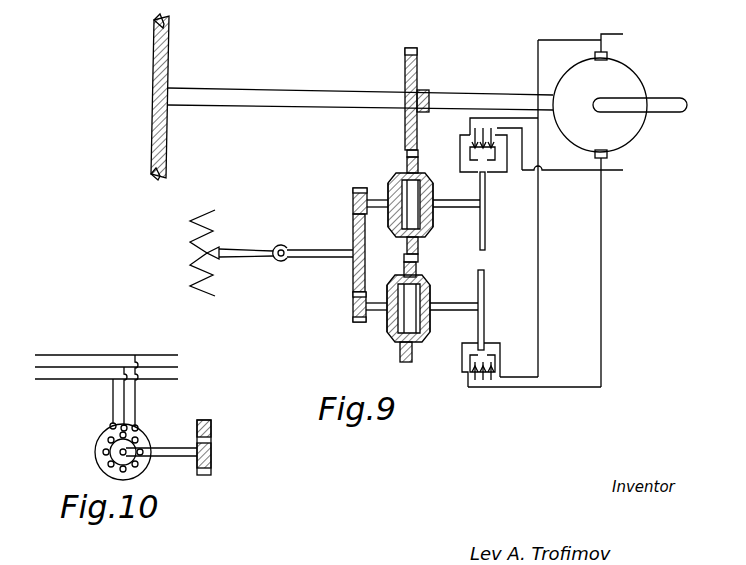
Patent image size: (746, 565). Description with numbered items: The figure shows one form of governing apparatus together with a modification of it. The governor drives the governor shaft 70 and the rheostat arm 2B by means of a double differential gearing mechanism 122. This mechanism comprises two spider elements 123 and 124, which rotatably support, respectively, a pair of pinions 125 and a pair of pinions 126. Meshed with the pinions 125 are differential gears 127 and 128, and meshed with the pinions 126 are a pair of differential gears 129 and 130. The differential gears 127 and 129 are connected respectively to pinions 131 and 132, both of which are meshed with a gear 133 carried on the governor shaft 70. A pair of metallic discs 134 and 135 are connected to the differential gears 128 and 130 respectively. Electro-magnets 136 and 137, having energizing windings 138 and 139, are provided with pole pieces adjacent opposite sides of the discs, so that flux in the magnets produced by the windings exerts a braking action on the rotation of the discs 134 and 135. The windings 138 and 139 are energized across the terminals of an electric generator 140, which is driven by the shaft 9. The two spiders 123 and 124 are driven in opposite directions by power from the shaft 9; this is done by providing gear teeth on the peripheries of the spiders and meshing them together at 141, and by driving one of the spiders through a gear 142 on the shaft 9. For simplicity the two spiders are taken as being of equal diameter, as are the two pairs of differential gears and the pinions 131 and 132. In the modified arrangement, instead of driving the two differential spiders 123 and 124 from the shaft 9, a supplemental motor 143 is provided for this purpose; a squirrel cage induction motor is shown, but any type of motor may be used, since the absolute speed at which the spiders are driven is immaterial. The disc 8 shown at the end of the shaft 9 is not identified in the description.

In FIG. 9, the disc 8 is at (153, 64).
In FIG. 9, the shaft 9 is at (492, 96).
In FIG. 9, the electric generator 140 is at (628, 74).
In FIG. 9, the gear 142 is at (405, 127).
In FIG. 9, the pinions 125 is at (418, 171).
In FIG. 9, the spider element 123 is at (406, 164).
In FIG. 9, the double differential gearing mechanism 122 is at (395, 196).
In FIG. 9, the differential gear 127 is at (389, 185).
In FIG. 9, the differential gear 128 is at (433, 186).
In FIG. 9, the meshing of spider gear teeth 141 is at (404, 258).
In FIG. 9, the pinions 126 is at (416, 273).
In FIG. 9, the spider element 124 is at (410, 318).
In FIG. 10, the spider element 124 is at (211, 424).
In FIG. 9, the differential gear 129 is at (390, 326).
In FIG. 9, the differential gear 130 is at (430, 330).
In FIG. 9, the pinion 131 is at (353, 203).
In FIG. 9, the gear 133 is at (353, 277).
In FIG. 9, the pinion 132 is at (353, 311).
In FIG. 9, the metallic disc 134 is at (486, 242).
In FIG. 9, the metallic disc 135 is at (485, 277).
In FIG. 9, the electro-magnet 136 is at (500, 172).
In FIG. 9, the energizing winding 138 is at (466, 144).
In FIG. 9, the electro-magnet 137 is at (500, 348).
In FIG. 9, the energizing winding 139 is at (468, 376).
In FIG. 9, the rheostat arm 2B is at (243, 249).
In FIG. 9, the governor shaft 70 is at (321, 256).
In FIG. 10, the supplemental motor 143 is at (143, 430).